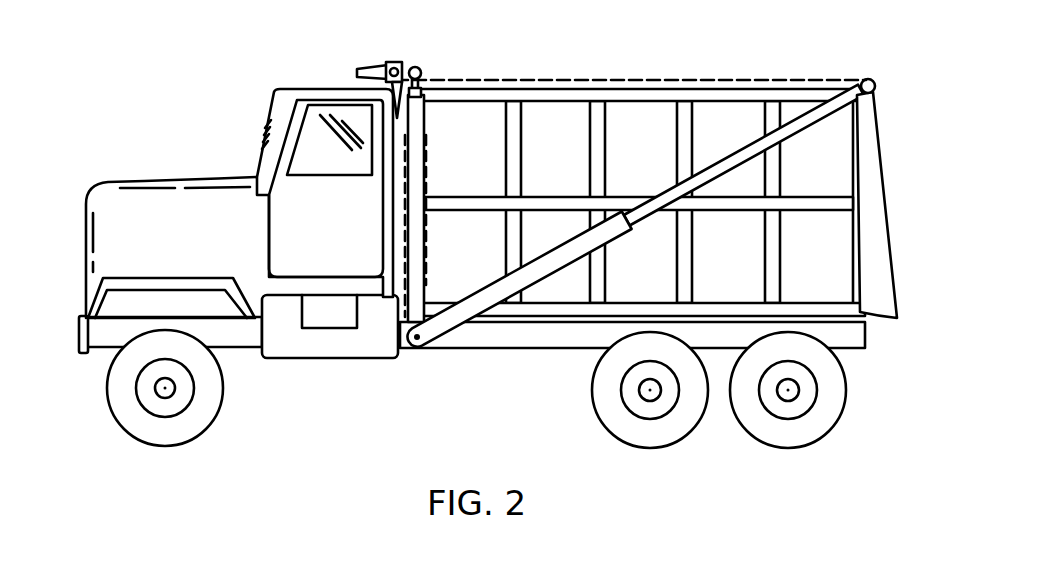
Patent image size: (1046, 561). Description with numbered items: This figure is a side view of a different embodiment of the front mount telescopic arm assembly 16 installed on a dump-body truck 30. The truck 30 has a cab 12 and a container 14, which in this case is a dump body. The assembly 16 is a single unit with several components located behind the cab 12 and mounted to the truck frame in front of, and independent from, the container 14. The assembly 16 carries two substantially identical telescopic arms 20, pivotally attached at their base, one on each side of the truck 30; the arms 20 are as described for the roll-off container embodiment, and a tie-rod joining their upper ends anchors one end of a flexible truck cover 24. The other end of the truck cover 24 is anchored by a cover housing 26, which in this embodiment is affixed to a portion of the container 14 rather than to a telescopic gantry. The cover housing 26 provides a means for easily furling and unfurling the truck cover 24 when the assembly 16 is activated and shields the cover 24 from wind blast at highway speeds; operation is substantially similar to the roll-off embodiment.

The cab 12 is at (292, 103).
The container 14 is at (547, 108).
The front mount telescopic arm assembly 16 is at (407, 213).
The telescopic arm 20 is at (717, 160).
The truck cover 24 is at (795, 78).
The cover housing 26 is at (398, 62).
The dump-body truck 30 is at (383, 394).